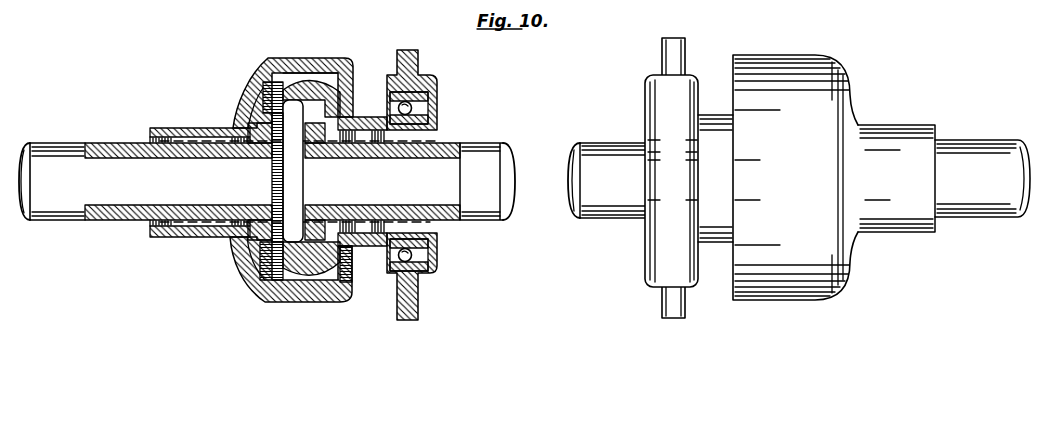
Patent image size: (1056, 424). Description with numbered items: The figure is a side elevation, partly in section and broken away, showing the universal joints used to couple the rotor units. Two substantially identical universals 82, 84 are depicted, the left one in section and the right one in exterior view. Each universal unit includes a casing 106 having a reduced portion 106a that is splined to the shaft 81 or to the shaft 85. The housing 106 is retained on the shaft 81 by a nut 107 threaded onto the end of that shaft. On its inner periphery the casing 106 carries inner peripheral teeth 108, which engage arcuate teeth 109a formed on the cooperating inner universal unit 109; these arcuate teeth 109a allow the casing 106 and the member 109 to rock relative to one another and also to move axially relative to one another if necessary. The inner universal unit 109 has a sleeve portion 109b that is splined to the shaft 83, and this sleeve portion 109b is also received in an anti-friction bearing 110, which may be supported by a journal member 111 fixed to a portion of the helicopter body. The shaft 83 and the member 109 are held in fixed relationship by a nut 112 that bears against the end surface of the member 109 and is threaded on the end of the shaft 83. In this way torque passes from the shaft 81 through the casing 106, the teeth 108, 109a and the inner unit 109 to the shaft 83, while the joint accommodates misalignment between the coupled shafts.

The shaft 81 is at (54, 142).
The universal 82 is at (305, 58).
The shaft 83 is at (593, 142).
The universal 84 is at (808, 36).
The shaft 85 is at (1008, 120).
The casing 106 is at (266, 50).
The reduced portion 106a is at (206, 106).
The nut 107 is at (231, 250).
The inner peripheral teeth 108 is at (352, 78).
The inner universal unit 109 is at (307, 267).
The arcuate teeth 109a is at (328, 72).
The sleeve portion 109b is at (372, 242).
The anti-friction bearing 110 is at (425, 118).
The journal member 111 is at (420, 76).
The nut 112 is at (263, 105).